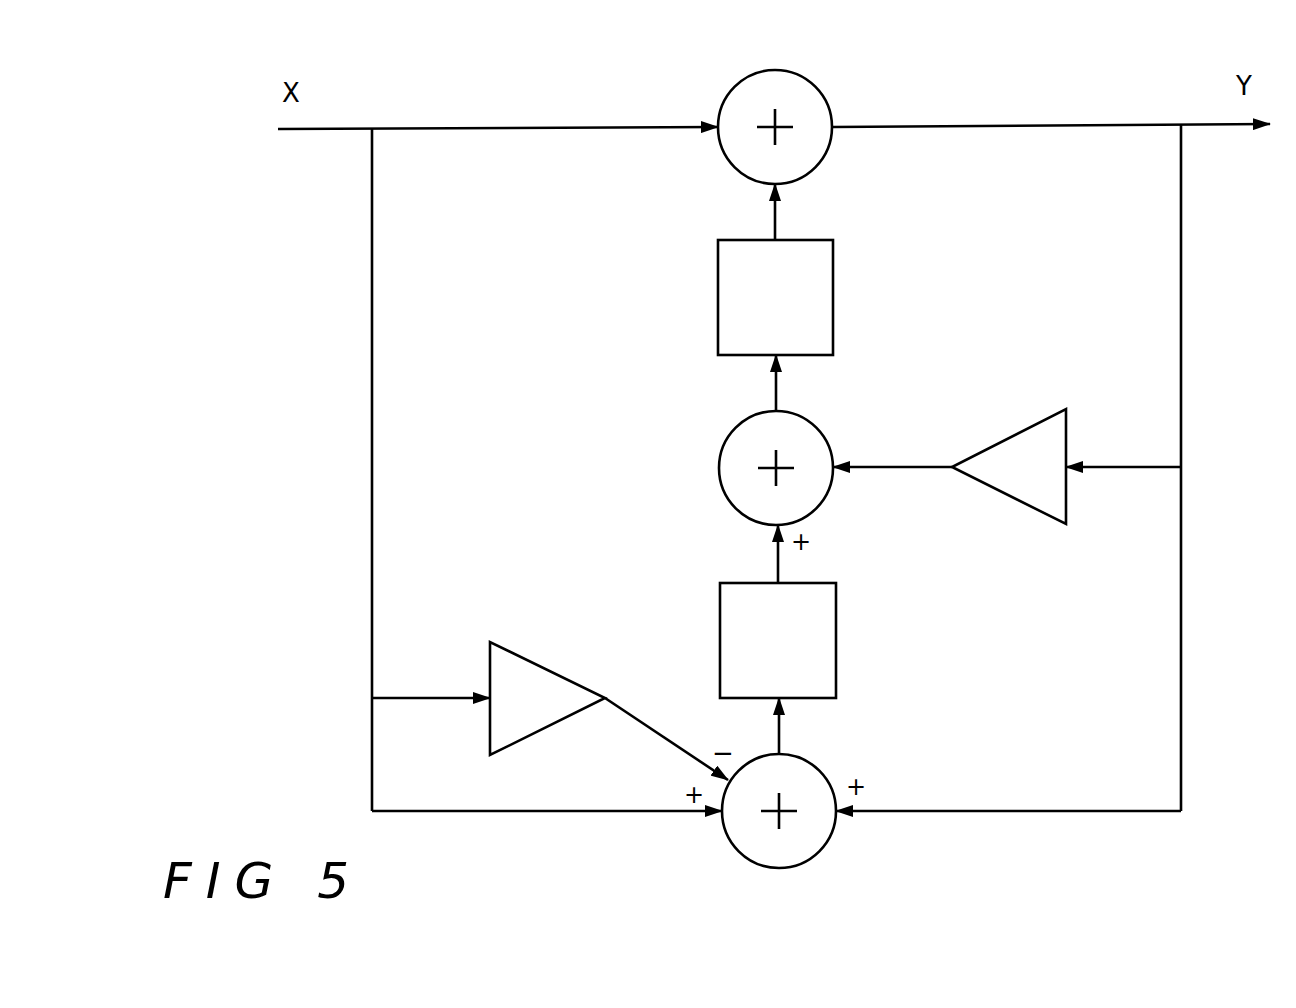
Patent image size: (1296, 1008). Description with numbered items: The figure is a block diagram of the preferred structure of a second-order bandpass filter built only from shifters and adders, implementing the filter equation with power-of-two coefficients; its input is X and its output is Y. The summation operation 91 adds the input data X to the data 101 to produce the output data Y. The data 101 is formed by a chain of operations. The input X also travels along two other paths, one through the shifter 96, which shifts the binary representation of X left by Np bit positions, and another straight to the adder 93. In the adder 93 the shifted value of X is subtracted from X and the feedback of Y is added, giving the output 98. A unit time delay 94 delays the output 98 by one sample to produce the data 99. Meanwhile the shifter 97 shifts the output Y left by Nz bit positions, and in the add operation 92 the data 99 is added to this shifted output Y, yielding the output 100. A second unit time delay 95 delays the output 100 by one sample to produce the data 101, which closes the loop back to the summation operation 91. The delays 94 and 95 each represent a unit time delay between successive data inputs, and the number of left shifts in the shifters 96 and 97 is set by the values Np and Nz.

The summation operation 91 is at (722, 98).
The add operation 92 is at (719, 458).
The adder 93 is at (723, 837).
The unit time delay 94 is at (836, 638).
The unit time delay 95 is at (833, 283).
The shifter 96 is at (513, 652).
The shifter 97 is at (1030, 425).
The output 98 is at (779, 740).
The data 99 is at (778, 570).
The output 100 is at (776, 395).
The data 101 is at (775, 220).